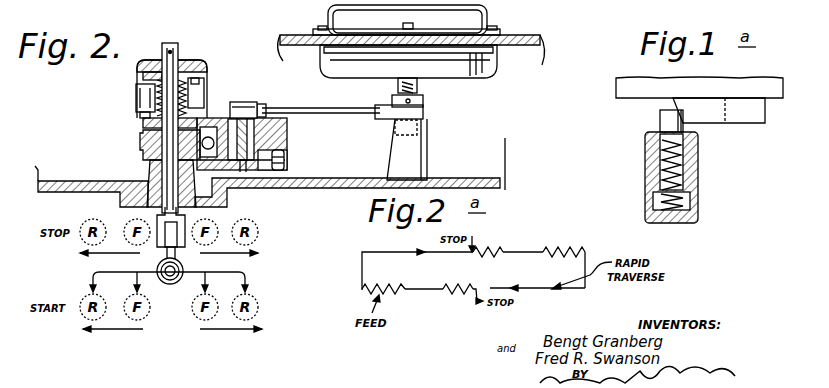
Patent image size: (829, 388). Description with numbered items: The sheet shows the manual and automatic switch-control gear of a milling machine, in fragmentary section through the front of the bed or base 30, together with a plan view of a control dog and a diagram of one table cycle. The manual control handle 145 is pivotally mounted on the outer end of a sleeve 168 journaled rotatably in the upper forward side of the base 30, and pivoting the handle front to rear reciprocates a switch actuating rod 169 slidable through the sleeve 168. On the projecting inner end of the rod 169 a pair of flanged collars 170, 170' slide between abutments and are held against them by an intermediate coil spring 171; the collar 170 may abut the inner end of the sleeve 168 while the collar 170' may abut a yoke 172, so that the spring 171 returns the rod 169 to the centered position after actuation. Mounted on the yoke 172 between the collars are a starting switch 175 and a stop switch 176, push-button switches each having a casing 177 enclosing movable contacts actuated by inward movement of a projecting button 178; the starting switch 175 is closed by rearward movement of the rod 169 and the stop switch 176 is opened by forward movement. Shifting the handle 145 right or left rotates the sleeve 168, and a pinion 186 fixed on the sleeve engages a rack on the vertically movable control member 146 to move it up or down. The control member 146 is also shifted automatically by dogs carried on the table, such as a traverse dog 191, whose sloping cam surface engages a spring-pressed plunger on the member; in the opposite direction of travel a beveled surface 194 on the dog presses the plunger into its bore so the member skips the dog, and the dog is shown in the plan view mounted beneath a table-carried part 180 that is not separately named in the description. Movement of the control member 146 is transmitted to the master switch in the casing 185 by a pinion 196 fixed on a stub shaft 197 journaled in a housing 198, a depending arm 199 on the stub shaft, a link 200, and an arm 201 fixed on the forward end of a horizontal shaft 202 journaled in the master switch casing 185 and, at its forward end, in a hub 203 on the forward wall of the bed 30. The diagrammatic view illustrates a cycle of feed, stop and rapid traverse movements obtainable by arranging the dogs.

In FIG. 2, the bed or base 30 is at (298, 210).
In FIG. 2, the manual control handle 145 is at (172, 284).
In FIG. 2, the control member 146 is at (212, 128).
In FIG. 1A, the control member 146 is at (648, 170).
In FIG. 2, the sleeve 168 is at (160, 210).
In FIG. 2, the switch actuating rod 169 is at (165, 171).
In FIG. 2, the flanged collar 170 is at (133, 135).
In FIG. 2, the flanged collar 170' is at (123, 76).
In FIG. 2, the coil spring 171 is at (150, 85).
In FIG. 2, the yoke 172 is at (186, 62).
In FIG. 2, the starting switch 175 is at (147, 98).
In FIG. 2, the stop switch 176 is at (204, 90).
In FIG. 2, the casing 177 is at (199, 93).
In FIG. 2, the button 178 is at (197, 68).
In FIG. 1A, the beam 180 is at (633, 87).
In FIG. 2, the casing 185 is at (483, 78).
In FIG. 2, the pinion 186 is at (143, 150).
In FIG. 1A, the traverse dog 191 is at (741, 113).
In FIG. 1A, the beveled edge or surface 194 is at (685, 126).
In FIG. 2, the pinion 196 is at (286, 133).
In FIG. 2, the stub shaft 197 is at (243, 172).
In FIG. 2, the housing 198 is at (286, 160).
In FIG. 2, the depending arm 199 is at (268, 106).
In FIG. 2, the link 200 is at (322, 109).
In FIG. 2, the arm 201 is at (381, 119).
In FIG. 2, the horizontal shaft 202 is at (417, 90).
In FIG. 2, the hub 203 is at (427, 152).